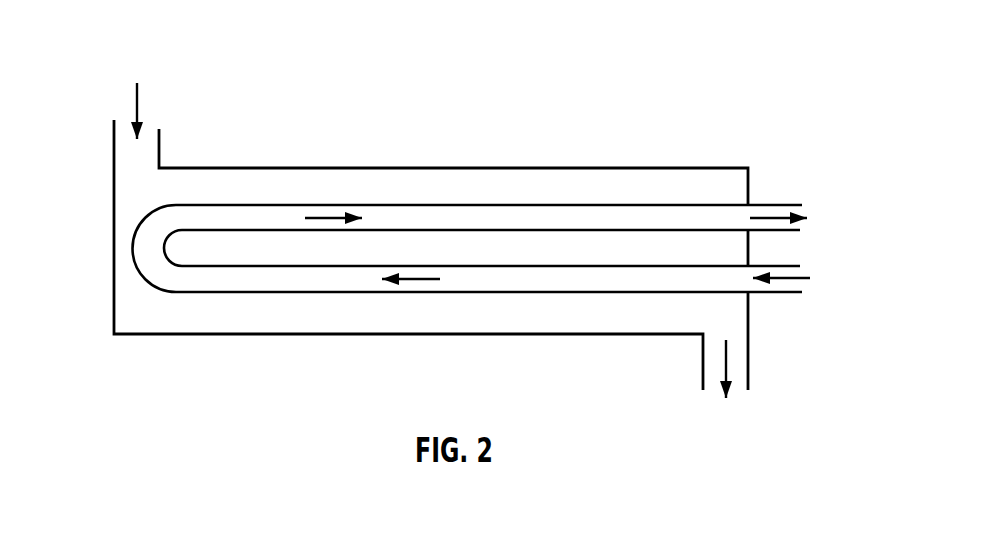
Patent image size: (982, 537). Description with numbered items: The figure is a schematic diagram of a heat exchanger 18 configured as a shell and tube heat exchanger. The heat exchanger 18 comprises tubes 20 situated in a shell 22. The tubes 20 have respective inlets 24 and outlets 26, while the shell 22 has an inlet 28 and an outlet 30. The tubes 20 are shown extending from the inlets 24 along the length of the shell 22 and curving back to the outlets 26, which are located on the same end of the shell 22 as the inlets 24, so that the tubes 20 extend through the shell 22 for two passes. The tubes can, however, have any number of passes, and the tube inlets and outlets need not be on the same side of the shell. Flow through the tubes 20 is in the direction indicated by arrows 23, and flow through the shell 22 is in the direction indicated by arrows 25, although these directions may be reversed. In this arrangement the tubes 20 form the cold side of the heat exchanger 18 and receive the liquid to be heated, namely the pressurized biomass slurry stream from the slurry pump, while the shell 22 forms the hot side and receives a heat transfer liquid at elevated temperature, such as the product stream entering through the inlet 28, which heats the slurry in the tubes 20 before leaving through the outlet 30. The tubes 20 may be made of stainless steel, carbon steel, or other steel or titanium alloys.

The heat exchanger 18 is at (520, 42).
The tubes 20 is at (485, 205).
The shell 22 is at (638, 167).
The arrows 23 is at (343, 218).
The inlets 24 is at (767, 292).
The arrows 25 is at (137, 120).
The outlets 26 is at (767, 203).
The inlet 28 is at (114, 185).
The outlet 30 is at (748, 368).